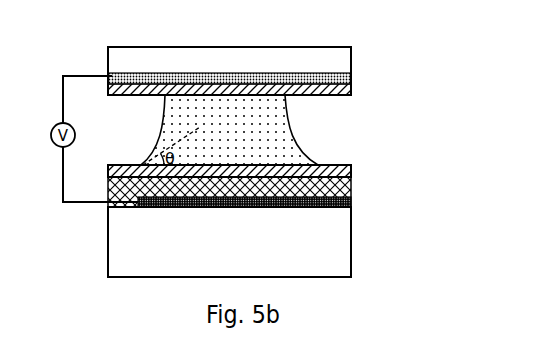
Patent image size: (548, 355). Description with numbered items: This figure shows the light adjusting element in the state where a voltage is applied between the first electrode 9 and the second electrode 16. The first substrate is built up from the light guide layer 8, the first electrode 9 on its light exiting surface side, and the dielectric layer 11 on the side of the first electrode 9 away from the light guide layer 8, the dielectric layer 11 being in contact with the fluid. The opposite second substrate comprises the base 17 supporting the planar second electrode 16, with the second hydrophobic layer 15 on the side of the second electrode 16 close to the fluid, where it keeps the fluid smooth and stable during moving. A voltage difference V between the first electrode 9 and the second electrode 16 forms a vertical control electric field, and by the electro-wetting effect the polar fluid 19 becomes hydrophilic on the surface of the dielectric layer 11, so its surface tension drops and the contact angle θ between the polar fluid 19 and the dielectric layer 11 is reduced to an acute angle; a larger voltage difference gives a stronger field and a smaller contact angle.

The base 17 is at (341, 53).
The second electrode 16 is at (341, 74).
The second hydrophobic layer 15 is at (339, 90).
The polar fluid 19 is at (273, 135).
The dielectric layer 11 is at (331, 176).
The first electrode 9 is at (331, 201).
The light guide layer 8 is at (331, 255).